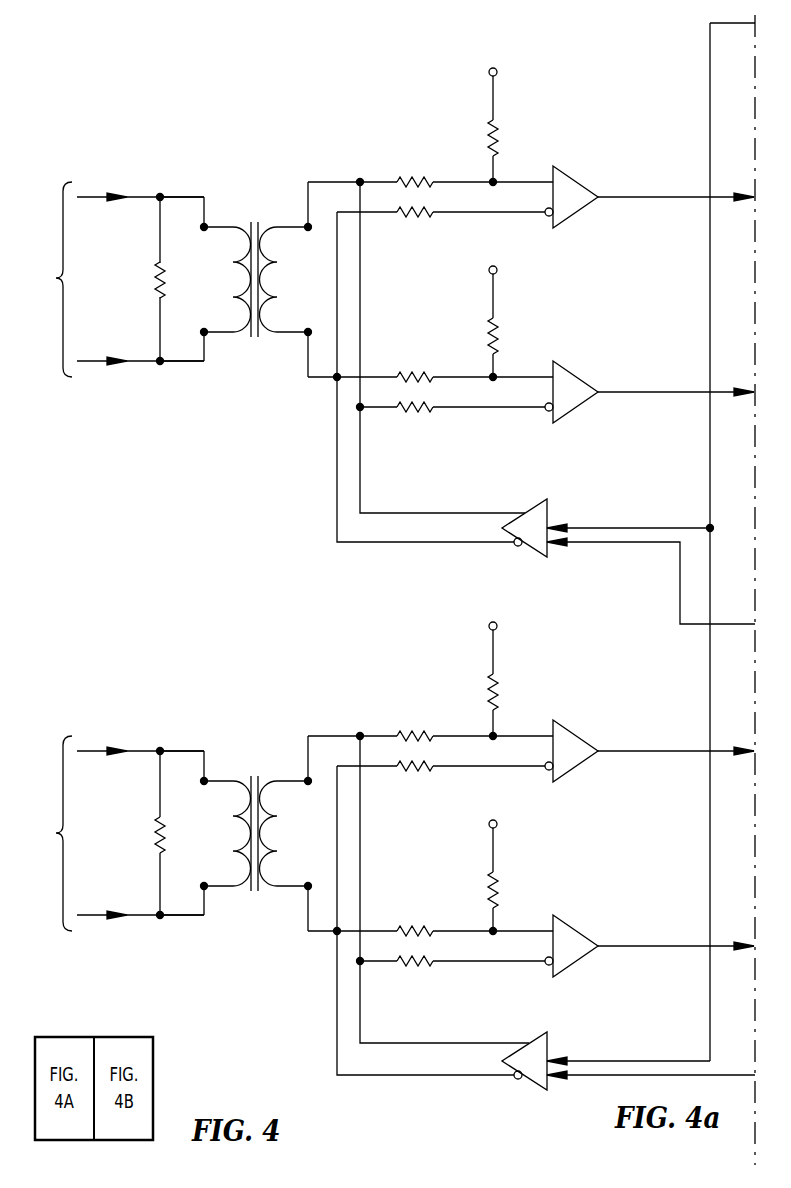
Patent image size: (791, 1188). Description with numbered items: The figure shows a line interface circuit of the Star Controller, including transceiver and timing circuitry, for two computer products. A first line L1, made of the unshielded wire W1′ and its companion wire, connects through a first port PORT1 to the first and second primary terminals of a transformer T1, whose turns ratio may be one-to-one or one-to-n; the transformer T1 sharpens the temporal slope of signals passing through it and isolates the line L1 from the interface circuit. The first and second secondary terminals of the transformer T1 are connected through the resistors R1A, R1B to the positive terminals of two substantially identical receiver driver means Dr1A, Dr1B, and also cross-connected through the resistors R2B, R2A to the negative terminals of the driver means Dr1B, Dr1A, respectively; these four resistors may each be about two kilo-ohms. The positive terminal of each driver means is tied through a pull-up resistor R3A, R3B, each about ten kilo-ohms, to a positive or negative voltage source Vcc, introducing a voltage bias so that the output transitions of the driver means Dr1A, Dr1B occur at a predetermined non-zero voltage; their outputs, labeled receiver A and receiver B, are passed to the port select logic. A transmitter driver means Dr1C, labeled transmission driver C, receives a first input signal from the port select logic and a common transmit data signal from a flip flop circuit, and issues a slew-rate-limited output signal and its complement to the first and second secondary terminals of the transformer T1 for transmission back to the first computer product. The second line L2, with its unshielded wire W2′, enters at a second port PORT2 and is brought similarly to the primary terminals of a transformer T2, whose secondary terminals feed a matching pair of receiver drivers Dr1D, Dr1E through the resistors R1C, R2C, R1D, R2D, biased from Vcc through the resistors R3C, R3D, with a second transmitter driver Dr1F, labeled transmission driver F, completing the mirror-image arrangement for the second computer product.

The line L1 is at (52, 279).
The line L2 is at (52, 833).
The port 1 PORT1 is at (140, 279).
The port 2 PORT2 is at (140, 833).
The unshielded wire W1′ is at (183, 197).
The unshielded wire W2′ is at (183, 751).
The transformer T1 is at (256, 279).
The transformer T2 is at (256, 833).
The resistor R1A is at (415, 166).
The resistor R2A is at (415, 225).
The resistor R3A is at (513, 129).
The resistor R1B is at (415, 361).
The resistor R2B is at (415, 421).
The resistor R3B is at (513, 325).
The resistor R1C is at (415, 720).
The resistor R2C is at (415, 779).
The pull-up resistor R3C is at (514, 683).
The resistor R1D is at (415, 915).
The resistor R2D is at (415, 975).
The pull-up resistor R3D is at (514, 879).
The voltage source Vcc is at (493, 436).
The receiver driver means Dr1A is at (569, 211).
The receiver driver means Dr1B is at (569, 406).
The transmitter driver means Dr1C is at (527, 545).
The receiver D driver Dr1D is at (569, 765).
The receiver E driver Dr1E is at (569, 960).
The transmission driver F Dr1F is at (527, 1078).